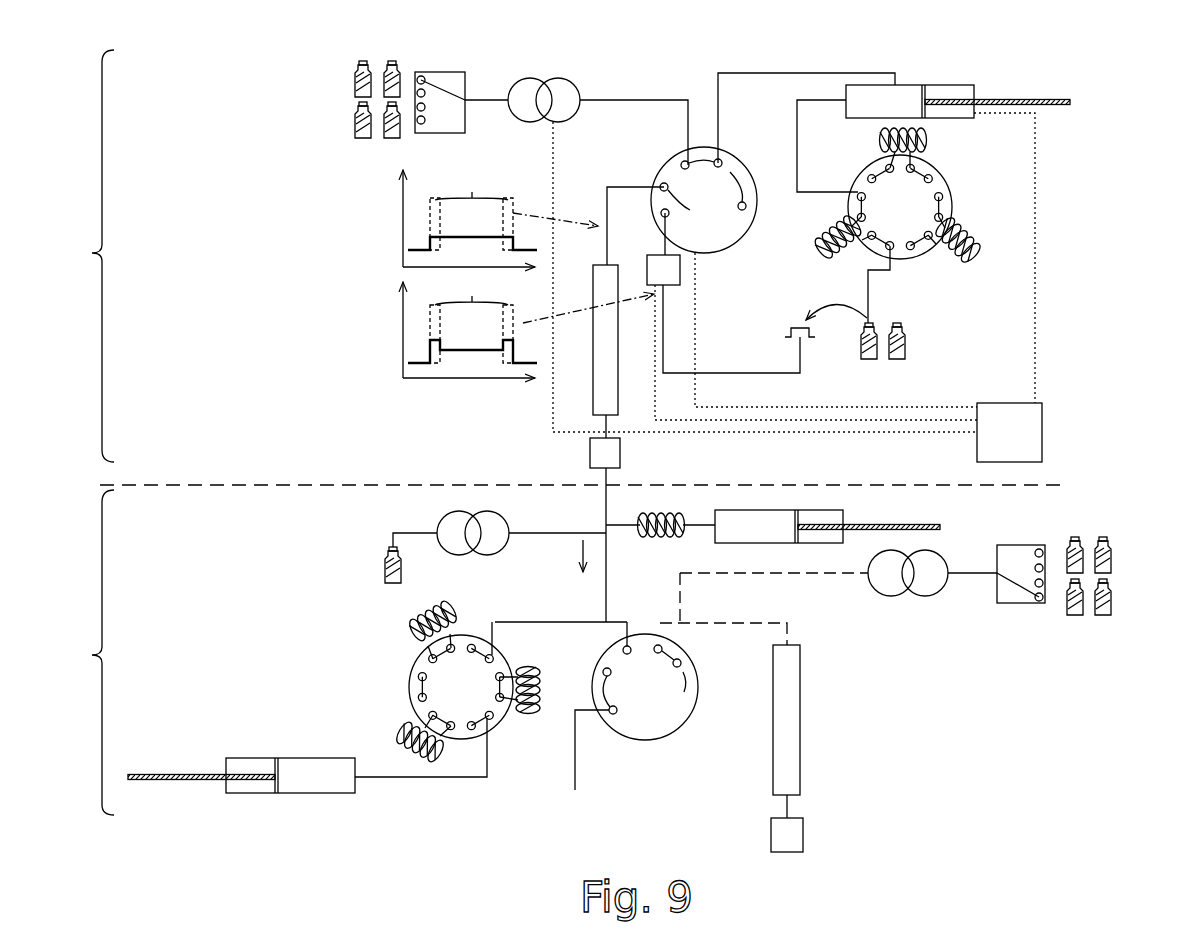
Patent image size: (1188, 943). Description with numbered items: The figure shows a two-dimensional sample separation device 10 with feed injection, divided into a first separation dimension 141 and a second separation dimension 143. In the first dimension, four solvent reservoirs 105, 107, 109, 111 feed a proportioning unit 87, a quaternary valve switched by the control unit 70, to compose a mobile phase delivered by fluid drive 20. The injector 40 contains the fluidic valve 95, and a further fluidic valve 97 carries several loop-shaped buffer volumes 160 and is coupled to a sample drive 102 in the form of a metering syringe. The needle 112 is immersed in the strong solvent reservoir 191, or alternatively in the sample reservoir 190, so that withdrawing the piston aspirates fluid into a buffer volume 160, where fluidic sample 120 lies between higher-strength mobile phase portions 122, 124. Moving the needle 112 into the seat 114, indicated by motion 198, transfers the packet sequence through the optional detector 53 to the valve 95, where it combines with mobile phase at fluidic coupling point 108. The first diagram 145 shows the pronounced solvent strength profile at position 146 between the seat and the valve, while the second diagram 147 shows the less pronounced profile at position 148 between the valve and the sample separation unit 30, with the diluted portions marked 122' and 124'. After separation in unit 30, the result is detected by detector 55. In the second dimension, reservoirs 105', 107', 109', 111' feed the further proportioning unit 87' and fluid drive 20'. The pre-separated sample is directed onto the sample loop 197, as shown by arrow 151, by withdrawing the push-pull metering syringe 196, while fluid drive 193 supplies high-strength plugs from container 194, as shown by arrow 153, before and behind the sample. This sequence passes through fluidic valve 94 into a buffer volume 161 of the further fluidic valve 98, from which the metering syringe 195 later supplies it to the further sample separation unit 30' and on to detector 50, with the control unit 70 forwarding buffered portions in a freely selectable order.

The two-dimensional sample separation device 10 is at (1078, 80).
The fluid drive 20 is at (544, 71).
The fluid drive 20' is at (908, 609).
The sample separation unit 30 is at (558, 348).
The further sample separation unit 30' is at (836, 720).
The injector 40 is at (652, 160).
The detector 50 is at (803, 836).
The detector 53 is at (647, 265).
The detector 55 is at (590, 453).
The control unit 70 is at (1009, 432).
The proportioning unit 87 is at (443, 77).
The further proportioning unit 87' is at (1026, 546).
The fluidic valve 94 is at (690, 736).
The fluidic valve 95 is at (683, 161).
The further fluidic valve 97 is at (904, 259).
The further fluidic valve 98 is at (409, 688).
The sample drive 102 is at (951, 85).
The solvent reservoir 105 is at (353, 157).
The solvent reservoir 105' is at (1141, 607).
The solvent reservoir 107 is at (309, 138).
The solvent reservoir 107' is at (1088, 624).
The fluidic coupling point 108 is at (676, 192).
The solvent reservoir 109 is at (302, 63).
The solvent reservoir 109' is at (1090, 531).
The solvent reservoir 111 is at (400, 53).
The solvent reservoir 111' is at (1130, 531).
The needle 112 is at (860, 355).
The seat 114 is at (798, 322).
The fluidic sample 120 is at (831, 250).
The mobile phase portion 122 is at (642, 253).
The modified mobile phase portion 122' is at (447, 197).
The mobile phase portion 124 is at (669, 280).
The modified mobile phase portion 124' is at (527, 197).
The first separation dimension 141 is at (72, 256).
The second separation dimension 143 is at (72, 652).
The first diagram 145 is at (396, 325).
The position between needle seat and fluidic valve 146 is at (562, 308).
The second diagram 147 is at (396, 220).
The position between fluidic valve and sample separation unit 148 is at (563, 218).
The arrow 151 is at (632, 485).
The arrow 153 is at (583, 554).
The buffer volume 160 is at (927, 140).
The buffer volume 161 is at (410, 616).
The sample reservoir 190 is at (904, 368).
The strong solvent reservoir 191 is at (872, 370).
The fluid drive 193 is at (440, 520).
The further mobile phase container 194 is at (378, 562).
The metering syringe 195 is at (240, 758).
The metering syringe 196 is at (720, 543).
The sample loop 197 is at (634, 515).
The needle motion 198 is at (823, 318).